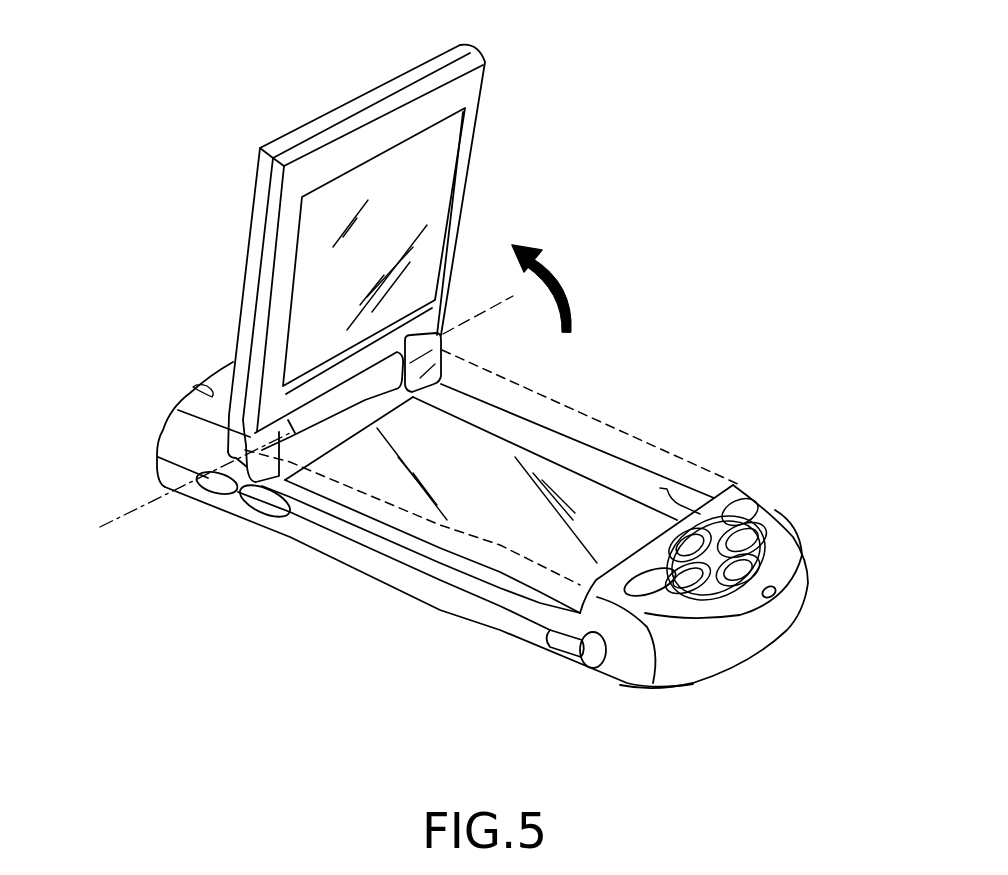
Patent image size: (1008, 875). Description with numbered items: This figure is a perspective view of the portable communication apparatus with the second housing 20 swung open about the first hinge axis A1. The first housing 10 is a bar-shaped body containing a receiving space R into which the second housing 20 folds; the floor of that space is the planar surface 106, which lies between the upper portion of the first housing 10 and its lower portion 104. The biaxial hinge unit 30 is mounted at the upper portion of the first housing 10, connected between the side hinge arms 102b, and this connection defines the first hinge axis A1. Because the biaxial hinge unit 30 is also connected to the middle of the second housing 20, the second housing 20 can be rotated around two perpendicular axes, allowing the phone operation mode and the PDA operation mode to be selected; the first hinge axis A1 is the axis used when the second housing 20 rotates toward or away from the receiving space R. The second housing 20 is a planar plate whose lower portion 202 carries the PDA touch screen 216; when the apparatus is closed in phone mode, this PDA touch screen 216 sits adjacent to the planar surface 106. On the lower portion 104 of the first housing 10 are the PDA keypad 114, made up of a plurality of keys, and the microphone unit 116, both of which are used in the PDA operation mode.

The second housing 20 is at (389, 252).
The lower portion 202 is at (452, 102).
The PDA touch screen 216 is at (430, 197).
The side hinge arms 102b is at (445, 357).
The planar surface 106 is at (598, 505).
The PDA keypad 114 is at (742, 538).
The lower portion 104 is at (712, 565).
The microphone unit 116 is at (770, 598).
The first hinge axis A1 is at (120, 506).
The biaxial hinge unit 30 is at (330, 412).
The first housing 10 is at (517, 512).
The receiving space R is at (550, 557).